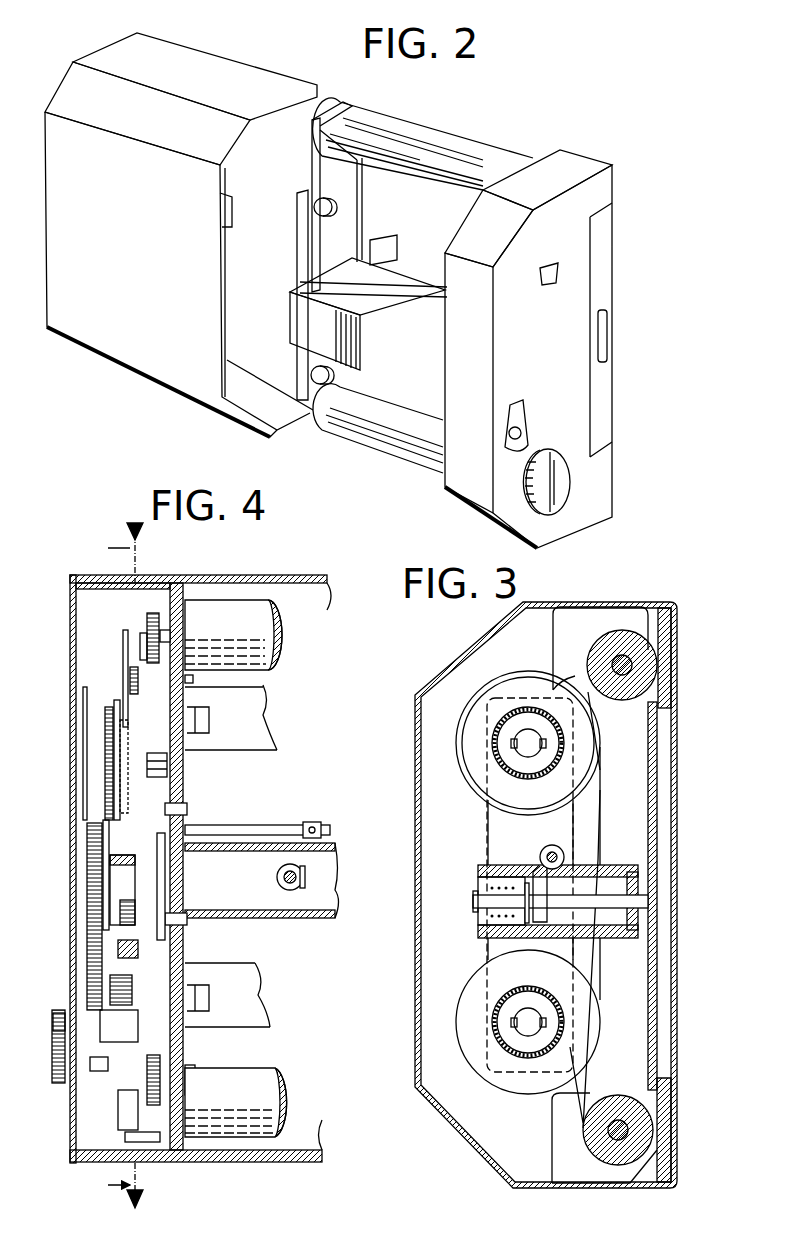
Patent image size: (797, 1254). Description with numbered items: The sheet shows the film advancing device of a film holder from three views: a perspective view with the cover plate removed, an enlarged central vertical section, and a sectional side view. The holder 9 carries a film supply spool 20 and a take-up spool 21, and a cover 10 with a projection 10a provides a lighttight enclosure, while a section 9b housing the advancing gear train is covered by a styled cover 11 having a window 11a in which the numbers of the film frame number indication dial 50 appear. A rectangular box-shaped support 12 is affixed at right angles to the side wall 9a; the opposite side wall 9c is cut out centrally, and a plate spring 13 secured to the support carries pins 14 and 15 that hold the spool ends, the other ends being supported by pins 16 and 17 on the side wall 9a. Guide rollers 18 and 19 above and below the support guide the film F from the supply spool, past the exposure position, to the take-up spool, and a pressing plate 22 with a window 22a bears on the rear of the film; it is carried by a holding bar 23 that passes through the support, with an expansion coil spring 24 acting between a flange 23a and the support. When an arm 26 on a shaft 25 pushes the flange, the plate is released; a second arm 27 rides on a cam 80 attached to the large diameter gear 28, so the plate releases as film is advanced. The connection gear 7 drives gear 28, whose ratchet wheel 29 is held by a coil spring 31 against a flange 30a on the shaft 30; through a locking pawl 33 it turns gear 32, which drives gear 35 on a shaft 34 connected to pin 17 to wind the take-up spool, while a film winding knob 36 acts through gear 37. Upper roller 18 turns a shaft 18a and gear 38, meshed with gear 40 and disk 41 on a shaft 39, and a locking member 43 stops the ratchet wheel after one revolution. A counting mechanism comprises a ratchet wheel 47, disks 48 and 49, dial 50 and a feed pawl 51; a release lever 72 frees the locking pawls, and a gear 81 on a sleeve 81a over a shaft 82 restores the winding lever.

In FIG. 4, the connection gear 7 is at (188, 1043).
In FIG. 2, the holder 9 is at (503, 150).
In FIG. 4, the side wall 9a is at (180, 590).
In FIG. 4, the section 9b is at (90, 592).
In FIG. 2, the side wall 9c is at (357, 208).
In FIG. 3, the side wall 9c is at (638, 752).
In FIG. 2, the cover 10 is at (268, 75).
In FIG. 4, the cover 10 is at (277, 582).
In FIG. 2, the projection 10a is at (233, 212).
In FIG. 2, the styled cover 11 is at (587, 237).
In FIG. 3, the styled cover 11 is at (460, 657).
In FIG. 4, the styled cover 11 is at (73, 595).
In FIG. 2, the window 11a is at (543, 283).
In FIG. 2, the support 12 is at (290, 310).
In FIG. 3, the support 12 is at (605, 864).
In FIG. 4, the support 12 is at (303, 912).
In FIG. 2, the plate spring 13 is at (307, 242).
In FIG. 3, the plate spring 13 is at (490, 818).
In FIG. 2, the pin 14 is at (318, 198).
In FIG. 3, the pin 14 is at (522, 733).
In FIG. 2, the pin 15 is at (303, 360).
In FIG. 3, the pin 15 is at (537, 1017).
In FIG. 4, the pin 16 is at (205, 710).
In FIG. 4, the pin 17 is at (210, 990).
In FIG. 2, the upper guide roller 18 is at (366, 128).
In FIG. 3, the upper guide roller 18 is at (600, 642).
In FIG. 4, the upper guide roller 18 is at (283, 647).
In FIG. 4, the shaft 18a is at (163, 630).
In FIG. 2, the lower guide roller 19 is at (345, 430).
In FIG. 3, the lower guide roller 19 is at (613, 1100).
In FIG. 4, the lower guide roller 19 is at (248, 1075).
In FIG. 3, the film supply spool 20 is at (528, 710).
In FIG. 4, the film supply spool 20 is at (253, 753).
In FIG. 3, the take-up spool 21 is at (497, 1012).
In FIG. 4, the take-up spool 21 is at (220, 970).
In FIG. 2, the pressing plate 22 is at (430, 203).
In FIG. 3, the pressing plate 22 is at (658, 970).
In FIG. 2, the window 22a is at (393, 243).
In FIG. 3, the holding bar 23 is at (613, 908).
In FIG. 4, the holding bar 23 is at (303, 879).
In FIG. 3, the flange 23a is at (480, 897).
In FIG. 4, the flange 23a is at (278, 875).
In FIG. 3, the expansion coil spring 24 is at (480, 870).
In FIG. 3, the shaft 25 is at (547, 853).
In FIG. 4, the shaft 25 is at (247, 826).
In FIG. 3, the arm 26 is at (537, 917).
In FIG. 4, the arm 26 is at (303, 822).
In FIG. 3, the arm 27 is at (488, 960).
In FIG. 4, the arm 27 is at (187, 806).
In FIG. 4, the large diameter gear 28 is at (187, 925).
In FIG. 4, the ratchet wheel 29 is at (120, 950).
In FIG. 4, the shaft 30 is at (120, 890).
In FIG. 4, the flange 30a is at (103, 862).
In FIG. 4, the coil spring 31 is at (120, 933).
In FIG. 4, the gear 32 is at (87, 824).
In FIG. 4, the locking pawl 33 is at (120, 978).
In FIG. 4, the shaft 34 is at (121, 1023).
In FIG. 4, the gear 35 is at (70, 1007).
In FIG. 2, the film winding knob 36 is at (550, 510).
In FIG. 4, the film winding knob 36 is at (53, 1025).
In FIG. 4, the gear 37 is at (107, 1072).
In FIG. 4, the gear 38 is at (148, 618).
In FIG. 4, the shaft 39 is at (193, 678).
In FIG. 4, the gear 40 is at (138, 670).
In FIG. 4, the disk 41 is at (140, 636).
In FIG. 4, the locking member 43 is at (167, 762).
In FIG. 4, the ratchet wheel 47 is at (123, 750).
In FIG. 4, the disk 48 is at (103, 753).
In FIG. 4, the disk 49 is at (105, 727).
In FIG. 4, the film frame number indication dial 50 is at (83, 693).
In FIG. 4, the feed pawl 51 is at (145, 652).
In FIG. 2, the release lever 72 is at (530, 425).
In FIG. 3, the cam 80 is at (527, 903).
In FIG. 4, the cam 80 is at (165, 872).
In FIG. 4, the gear 81 is at (188, 1082).
In FIG. 4, the sleeve 81a is at (125, 1133).
In FIG. 4, the shaft 82 is at (120, 1113).
In FIG. 3, the film F is at (600, 697).